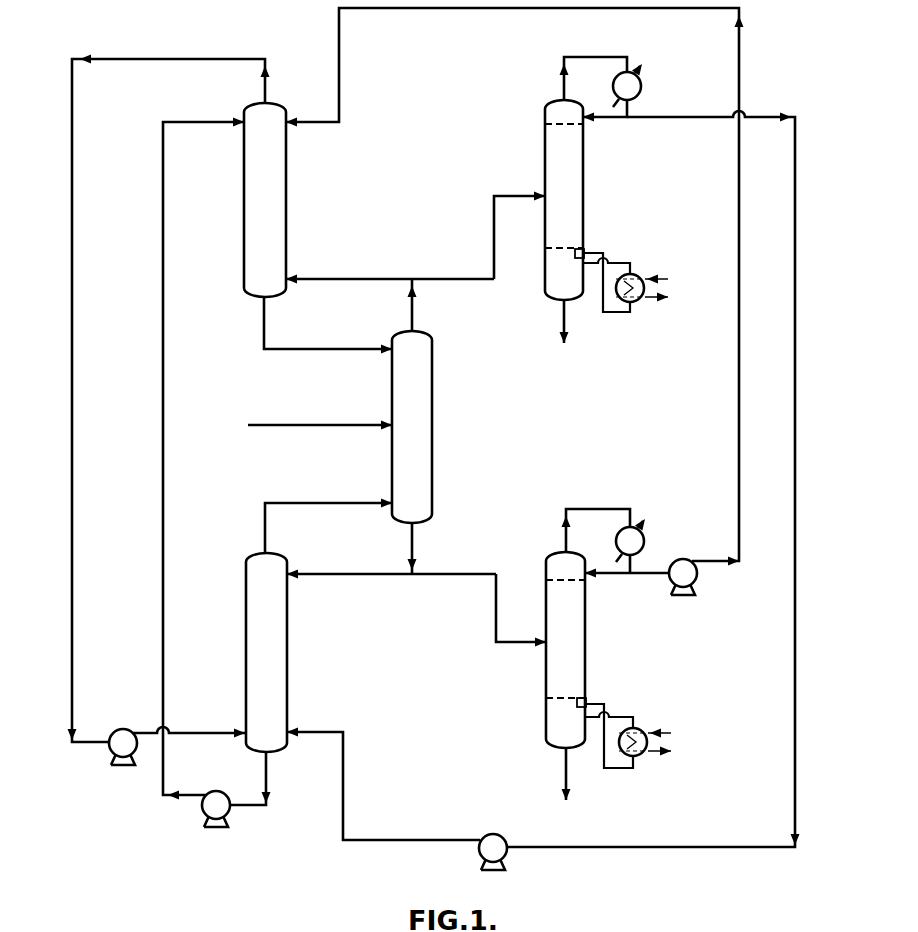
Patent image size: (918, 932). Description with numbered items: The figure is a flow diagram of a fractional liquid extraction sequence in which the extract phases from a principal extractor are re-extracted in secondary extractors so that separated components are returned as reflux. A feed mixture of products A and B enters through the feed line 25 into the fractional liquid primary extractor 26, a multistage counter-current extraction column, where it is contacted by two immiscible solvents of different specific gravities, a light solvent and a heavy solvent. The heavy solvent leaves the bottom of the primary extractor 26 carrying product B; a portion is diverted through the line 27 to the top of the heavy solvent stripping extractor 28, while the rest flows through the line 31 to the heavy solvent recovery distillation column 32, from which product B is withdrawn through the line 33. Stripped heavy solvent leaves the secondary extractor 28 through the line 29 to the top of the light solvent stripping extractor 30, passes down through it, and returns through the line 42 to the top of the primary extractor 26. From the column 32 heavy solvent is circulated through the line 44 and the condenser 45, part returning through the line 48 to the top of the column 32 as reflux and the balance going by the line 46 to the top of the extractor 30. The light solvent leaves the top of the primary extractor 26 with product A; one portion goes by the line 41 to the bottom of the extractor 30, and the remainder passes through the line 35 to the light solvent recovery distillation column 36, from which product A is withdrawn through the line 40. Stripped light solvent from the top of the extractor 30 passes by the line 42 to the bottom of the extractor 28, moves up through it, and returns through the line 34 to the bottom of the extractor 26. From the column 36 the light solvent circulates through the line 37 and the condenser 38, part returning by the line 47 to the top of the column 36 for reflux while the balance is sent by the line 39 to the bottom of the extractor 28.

The feed line 25 is at (320, 427).
The fractional liquid primary extractor 26 is at (422, 428).
The line 27 is at (391, 560).
The heavy solvent stripping extractor 28 is at (276, 662).
The line 29 is at (217, 473).
The light solvent stripping extractor 30 is at (275, 216).
The line 31 is at (504, 610).
The heavy solvent recovery distillation column 32 is at (576, 657).
The line 33 is at (579, 785).
The line 34 is at (328, 519).
The line 35 is at (506, 236).
The light solvent recovery distillation column 36 is at (576, 213).
The line 37 is at (594, 68).
The condenser 38 is at (642, 84).
The line 39 is at (543, 490).
The line 40 is at (575, 336).
The line 41 is at (390, 295).
The line 42 is at (230, 401).
The line 44 is at (596, 521).
The condenser 45 is at (645, 539).
The line 46 is at (515, 301).
The line 47 is at (605, 110).
The line 48 is at (627, 576).